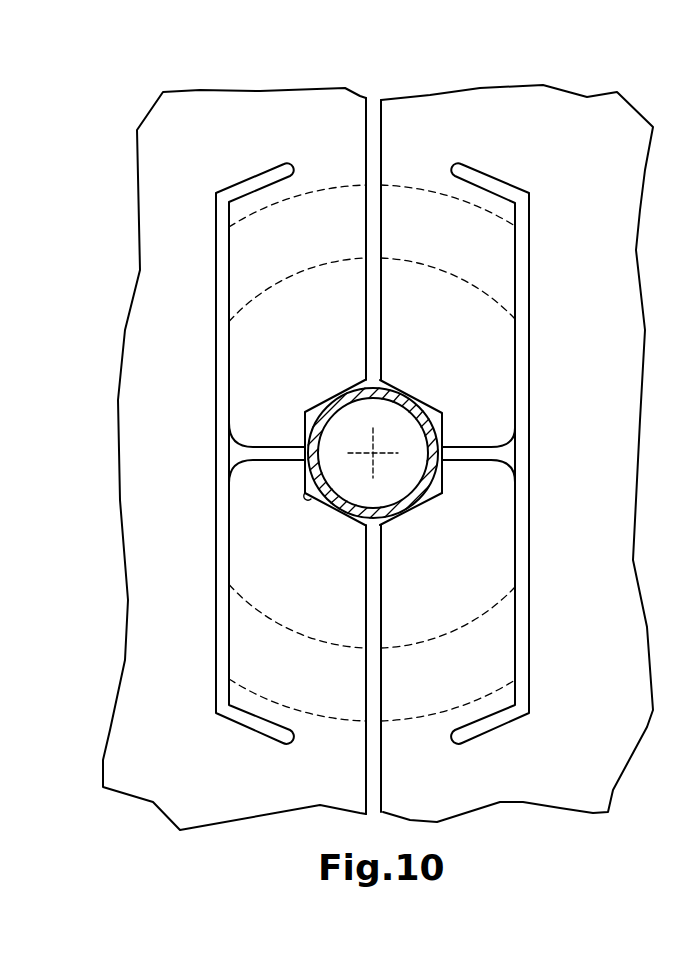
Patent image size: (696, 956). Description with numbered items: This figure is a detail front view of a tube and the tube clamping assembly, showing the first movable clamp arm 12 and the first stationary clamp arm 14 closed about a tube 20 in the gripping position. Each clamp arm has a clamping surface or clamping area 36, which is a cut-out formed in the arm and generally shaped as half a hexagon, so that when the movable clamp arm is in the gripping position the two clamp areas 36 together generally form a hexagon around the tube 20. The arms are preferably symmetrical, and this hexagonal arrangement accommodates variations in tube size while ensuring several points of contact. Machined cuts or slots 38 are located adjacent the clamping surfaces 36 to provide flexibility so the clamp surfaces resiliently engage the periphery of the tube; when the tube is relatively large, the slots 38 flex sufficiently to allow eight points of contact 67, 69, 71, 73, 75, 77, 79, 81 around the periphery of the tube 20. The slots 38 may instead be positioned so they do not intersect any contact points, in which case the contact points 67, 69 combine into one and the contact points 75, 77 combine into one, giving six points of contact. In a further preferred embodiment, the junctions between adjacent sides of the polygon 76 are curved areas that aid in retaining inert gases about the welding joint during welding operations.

The first movable clamp arm 12 is at (177, 258).
The first stationary clamp arm 14 is at (590, 220).
The tube 20 is at (350, 393).
The clamping surface 36 is at (390, 522).
The slots 38 is at (255, 178).
The point of contact 67 is at (303, 463).
The point of contact 69 is at (303, 438).
The point of contact 71 is at (330, 395).
The point of contact 73 is at (413, 395).
The point of contact 75 is at (443, 445).
The junction between adjacent sides of the polygon 76 is at (310, 498).
The point of contact 77 is at (443, 462).
The point of contact 79 is at (410, 503).
The point of contact 81 is at (330, 507).